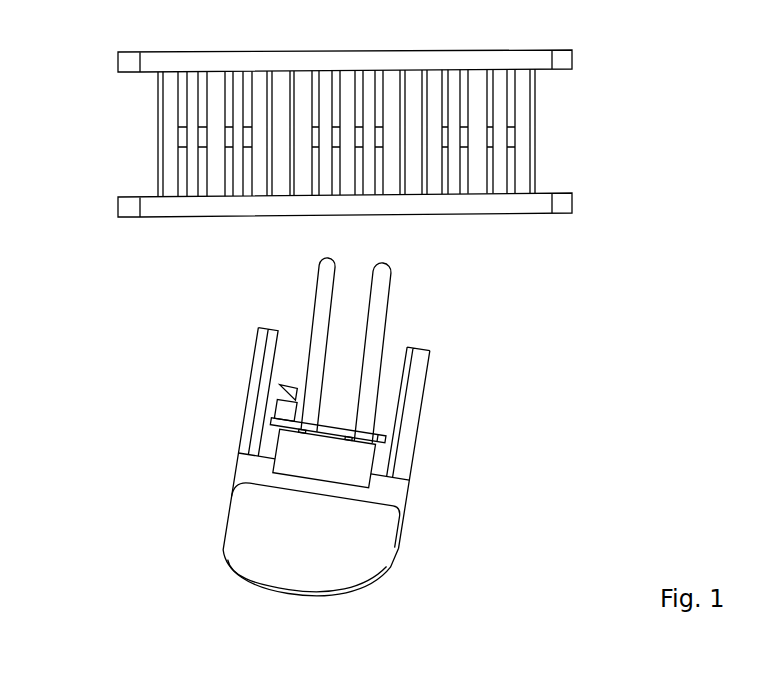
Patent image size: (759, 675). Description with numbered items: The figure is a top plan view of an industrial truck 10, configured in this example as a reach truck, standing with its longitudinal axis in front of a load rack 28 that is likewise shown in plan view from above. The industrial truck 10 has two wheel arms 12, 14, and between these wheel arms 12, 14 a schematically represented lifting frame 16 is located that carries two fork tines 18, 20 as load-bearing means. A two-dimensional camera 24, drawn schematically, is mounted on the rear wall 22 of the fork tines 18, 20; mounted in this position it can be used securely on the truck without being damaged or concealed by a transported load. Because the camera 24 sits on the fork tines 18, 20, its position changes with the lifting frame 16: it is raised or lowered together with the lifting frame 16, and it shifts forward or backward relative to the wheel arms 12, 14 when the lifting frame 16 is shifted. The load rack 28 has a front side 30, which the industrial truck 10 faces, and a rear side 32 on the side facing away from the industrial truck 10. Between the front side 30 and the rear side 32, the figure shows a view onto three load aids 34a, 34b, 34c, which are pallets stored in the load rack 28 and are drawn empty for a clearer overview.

The industrial truck 10 is at (298, 442).
The wheel arm 12 is at (415, 380).
The wheel arm 14 is at (265, 347).
The lifting frame 16 is at (350, 462).
The fork tine 18 is at (380, 288).
The fork tine 20 is at (318, 276).
The rear wall 22 is at (400, 427).
The 2D camera 24 is at (280, 414).
The load rack 28 is at (347, 142).
The front side 30 is at (503, 203).
The rear side 32 is at (517, 60).
The load aid 34a is at (166, 163).
The load aid 34b is at (370, 180).
The load aid 34c is at (522, 172).